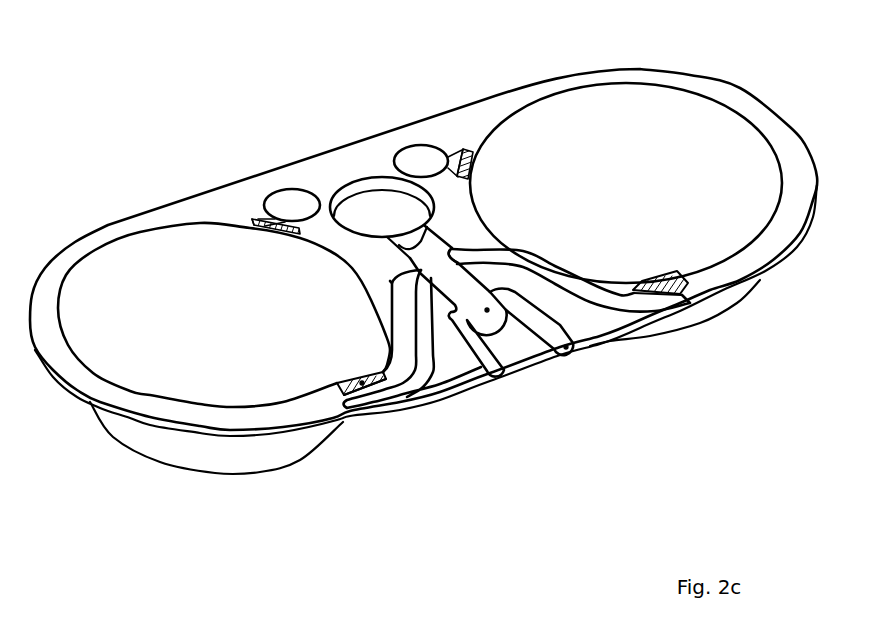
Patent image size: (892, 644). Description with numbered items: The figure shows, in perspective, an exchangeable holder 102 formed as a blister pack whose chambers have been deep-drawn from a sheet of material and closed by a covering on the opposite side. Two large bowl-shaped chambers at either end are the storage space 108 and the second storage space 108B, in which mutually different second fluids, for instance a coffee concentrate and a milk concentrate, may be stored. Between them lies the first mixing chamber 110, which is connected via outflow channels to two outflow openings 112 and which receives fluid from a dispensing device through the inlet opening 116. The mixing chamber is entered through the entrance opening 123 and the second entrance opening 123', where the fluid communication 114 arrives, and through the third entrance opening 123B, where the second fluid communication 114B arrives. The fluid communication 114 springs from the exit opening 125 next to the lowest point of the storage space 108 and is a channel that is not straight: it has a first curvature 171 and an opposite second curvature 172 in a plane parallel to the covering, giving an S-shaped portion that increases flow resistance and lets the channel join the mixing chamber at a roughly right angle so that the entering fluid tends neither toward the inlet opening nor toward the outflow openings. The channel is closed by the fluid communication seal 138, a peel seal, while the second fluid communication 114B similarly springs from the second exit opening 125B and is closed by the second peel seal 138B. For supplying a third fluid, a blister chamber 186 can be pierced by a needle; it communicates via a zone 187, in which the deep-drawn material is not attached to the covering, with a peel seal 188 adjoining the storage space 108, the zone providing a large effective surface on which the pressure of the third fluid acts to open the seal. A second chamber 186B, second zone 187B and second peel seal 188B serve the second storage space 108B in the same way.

The holder 102 is at (317, 405).
The storage space 108 is at (230, 393).
The second storage space 108B is at (720, 231).
The first mixing chamber 110 is at (489, 314).
The outflow opening 112 is at (568, 350).
The fluid communication 114 is at (394, 385).
The second fluid communication 114B is at (620, 303).
The inlet opening 116 is at (408, 255).
The entrance opening 123 is at (496, 321).
The second entrance opening 123' is at (336, 282).
The third entrance opening 123B is at (521, 235).
The exit opening 125 is at (360, 381).
The second exit opening 125B is at (650, 273).
The fluid communication seal 138 is at (360, 394).
The second peel seal 138B is at (664, 291).
The first curvature 171 is at (433, 375).
The second curvature 172 is at (391, 290).
The blister chamber 186 is at (280, 200).
The second chamber 186B is at (421, 158).
The zone 187 is at (256, 216).
The second zone 187B is at (460, 147).
The peel seal 188 is at (260, 228).
The second peel seal 188B is at (480, 155).